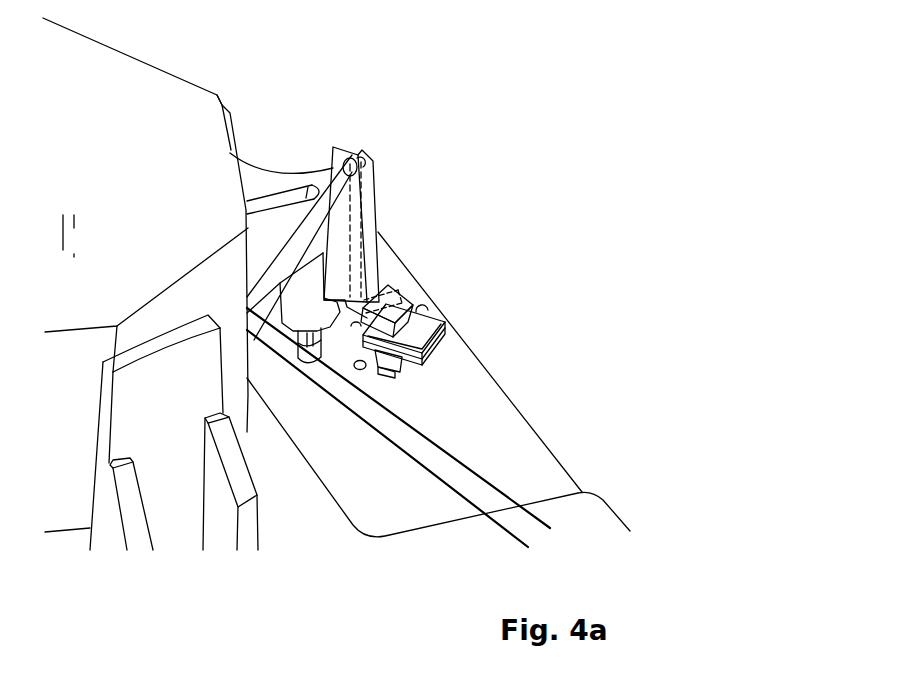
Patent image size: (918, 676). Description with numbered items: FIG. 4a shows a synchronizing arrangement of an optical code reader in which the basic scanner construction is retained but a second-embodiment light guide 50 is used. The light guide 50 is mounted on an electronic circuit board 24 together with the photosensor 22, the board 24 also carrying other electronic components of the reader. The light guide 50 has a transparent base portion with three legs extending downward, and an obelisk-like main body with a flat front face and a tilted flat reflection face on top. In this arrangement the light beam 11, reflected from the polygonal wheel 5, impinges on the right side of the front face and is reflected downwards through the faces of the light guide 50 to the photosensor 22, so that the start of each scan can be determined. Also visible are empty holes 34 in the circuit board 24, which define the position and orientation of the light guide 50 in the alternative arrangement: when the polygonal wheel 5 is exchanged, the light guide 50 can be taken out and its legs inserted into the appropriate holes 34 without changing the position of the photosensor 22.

The polygonal wheel 5 is at (125, 96).
The light guide 50 is at (319, 125).
The holes 34 is at (435, 290).
The photosensor 22 is at (459, 339).
The light beam 11 is at (440, 423).
The electronic circuit board 24 is at (523, 426).